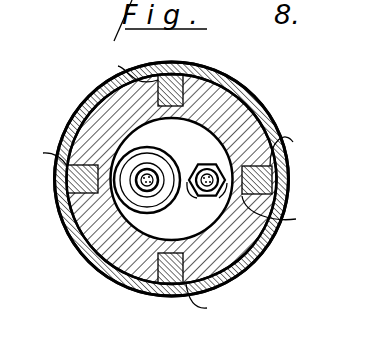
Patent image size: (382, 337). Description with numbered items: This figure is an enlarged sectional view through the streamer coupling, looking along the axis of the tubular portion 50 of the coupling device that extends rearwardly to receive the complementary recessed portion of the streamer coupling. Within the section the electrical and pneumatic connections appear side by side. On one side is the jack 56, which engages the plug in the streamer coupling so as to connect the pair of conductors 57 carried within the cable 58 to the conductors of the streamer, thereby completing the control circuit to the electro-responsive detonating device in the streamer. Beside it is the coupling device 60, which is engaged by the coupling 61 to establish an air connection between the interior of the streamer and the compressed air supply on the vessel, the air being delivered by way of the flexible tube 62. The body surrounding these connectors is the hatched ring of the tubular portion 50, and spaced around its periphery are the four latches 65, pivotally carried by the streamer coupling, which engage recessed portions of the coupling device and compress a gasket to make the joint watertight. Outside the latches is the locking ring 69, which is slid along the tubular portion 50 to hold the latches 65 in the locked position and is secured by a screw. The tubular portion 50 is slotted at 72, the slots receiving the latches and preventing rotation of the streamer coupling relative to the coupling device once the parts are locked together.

The tubular portion 50 is at (104, 242).
The jack 56 is at (148, 196).
The pair of conductors 57 is at (148, 174).
The cable 58 is at (156, 176).
The coupling device 60 is at (222, 163).
The coupling 61 is at (206, 196).
The flexible tube 62 is at (268, 232).
The latches 65 is at (174, 90).
The locking ring 69 is at (267, 78).
The slots 72 is at (169, 187).